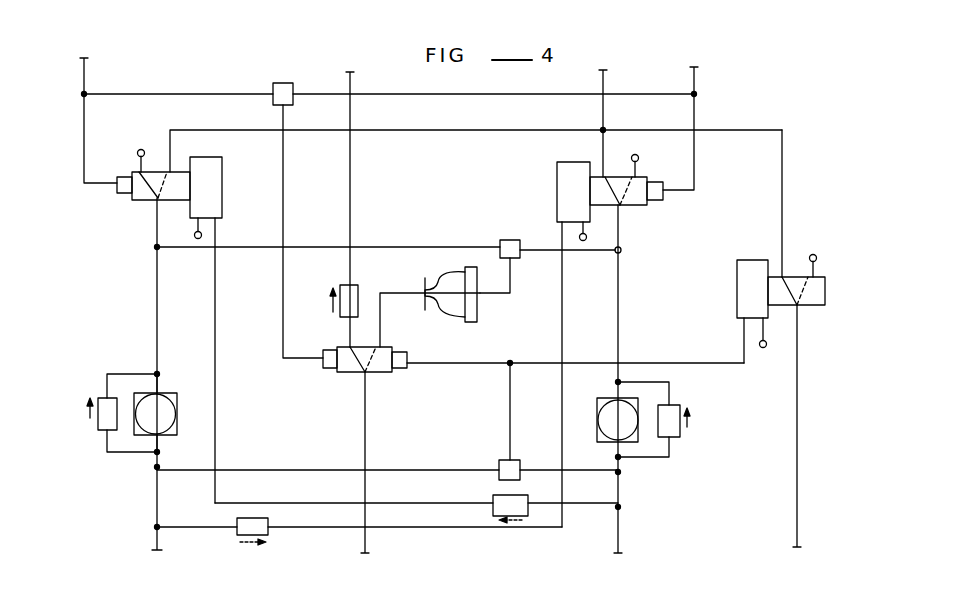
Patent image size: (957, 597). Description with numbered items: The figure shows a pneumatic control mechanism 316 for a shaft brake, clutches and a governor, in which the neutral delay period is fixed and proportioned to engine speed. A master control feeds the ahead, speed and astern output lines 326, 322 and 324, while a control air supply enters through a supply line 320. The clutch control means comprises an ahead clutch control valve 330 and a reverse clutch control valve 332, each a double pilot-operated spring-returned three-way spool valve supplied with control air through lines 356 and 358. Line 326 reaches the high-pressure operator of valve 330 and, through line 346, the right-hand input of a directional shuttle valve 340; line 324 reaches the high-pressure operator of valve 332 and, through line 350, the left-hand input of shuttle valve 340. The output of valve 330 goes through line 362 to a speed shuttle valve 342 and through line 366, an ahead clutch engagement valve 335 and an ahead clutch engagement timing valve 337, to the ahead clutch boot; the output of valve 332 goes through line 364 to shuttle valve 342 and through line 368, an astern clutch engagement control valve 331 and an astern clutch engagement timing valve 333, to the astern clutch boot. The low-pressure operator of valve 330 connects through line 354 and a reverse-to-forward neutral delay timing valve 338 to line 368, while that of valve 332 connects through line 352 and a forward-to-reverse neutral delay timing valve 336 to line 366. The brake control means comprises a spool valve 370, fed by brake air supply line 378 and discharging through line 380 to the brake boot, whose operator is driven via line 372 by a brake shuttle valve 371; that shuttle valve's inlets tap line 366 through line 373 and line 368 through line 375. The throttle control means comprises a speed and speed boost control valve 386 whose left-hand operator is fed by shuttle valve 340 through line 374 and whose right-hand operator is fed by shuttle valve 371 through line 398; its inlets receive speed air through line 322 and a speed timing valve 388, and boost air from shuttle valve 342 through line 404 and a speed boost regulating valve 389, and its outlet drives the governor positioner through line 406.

The control mechanism 316 is at (770, 120).
The pressure supply line 320 is at (604, 88).
The speed output line 322 is at (353, 88).
The astern output line 324 is at (88, 62).
The ahead output line 326 is at (696, 88).
The ahead clutch control valve 330 is at (640, 206).
The astern clutch engagement control valve 331 is at (172, 392).
The reverse clutch control valve 332 is at (180, 172).
The astern clutch engagement timing valve 333 is at (102, 396).
The ahead clutch engagement valve 335 is at (597, 402).
The forward-to-reverse neutral delay timing valve 336 is at (492, 512).
The ahead clutch engagement timing valve 337 is at (677, 404).
The reverse-to-forward neutral delay timing valve 338 is at (237, 536).
The directional shuttle valve 340 is at (283, 83).
The speed shuttle valve 342 is at (515, 225).
The line 346 is at (492, 96).
The line 350 is at (202, 93).
The line 352 is at (383, 502).
The line 354 is at (342, 530).
The line 356 is at (603, 147).
The line 358 is at (492, 132).
The line 362 is at (588, 253).
The line 364 is at (398, 245).
The line 366 is at (620, 289).
The line 368 is at (156, 283).
The three-way spool valve 370 is at (826, 278).
The brake shuttle valve 371 is at (522, 461).
The line 372 is at (693, 363).
The line 373 is at (607, 471).
The line 374 is at (284, 204).
The line 375 is at (397, 468).
The line 378 is at (783, 178).
The line 380 is at (798, 363).
The speed and speed boost control valve 386 is at (342, 374).
The speed timing valve 388 is at (359, 290).
The speed boost regulating valve 389 is at (430, 306).
The line 398 is at (468, 365).
The line 404 is at (495, 295).
The line 406 is at (364, 437).